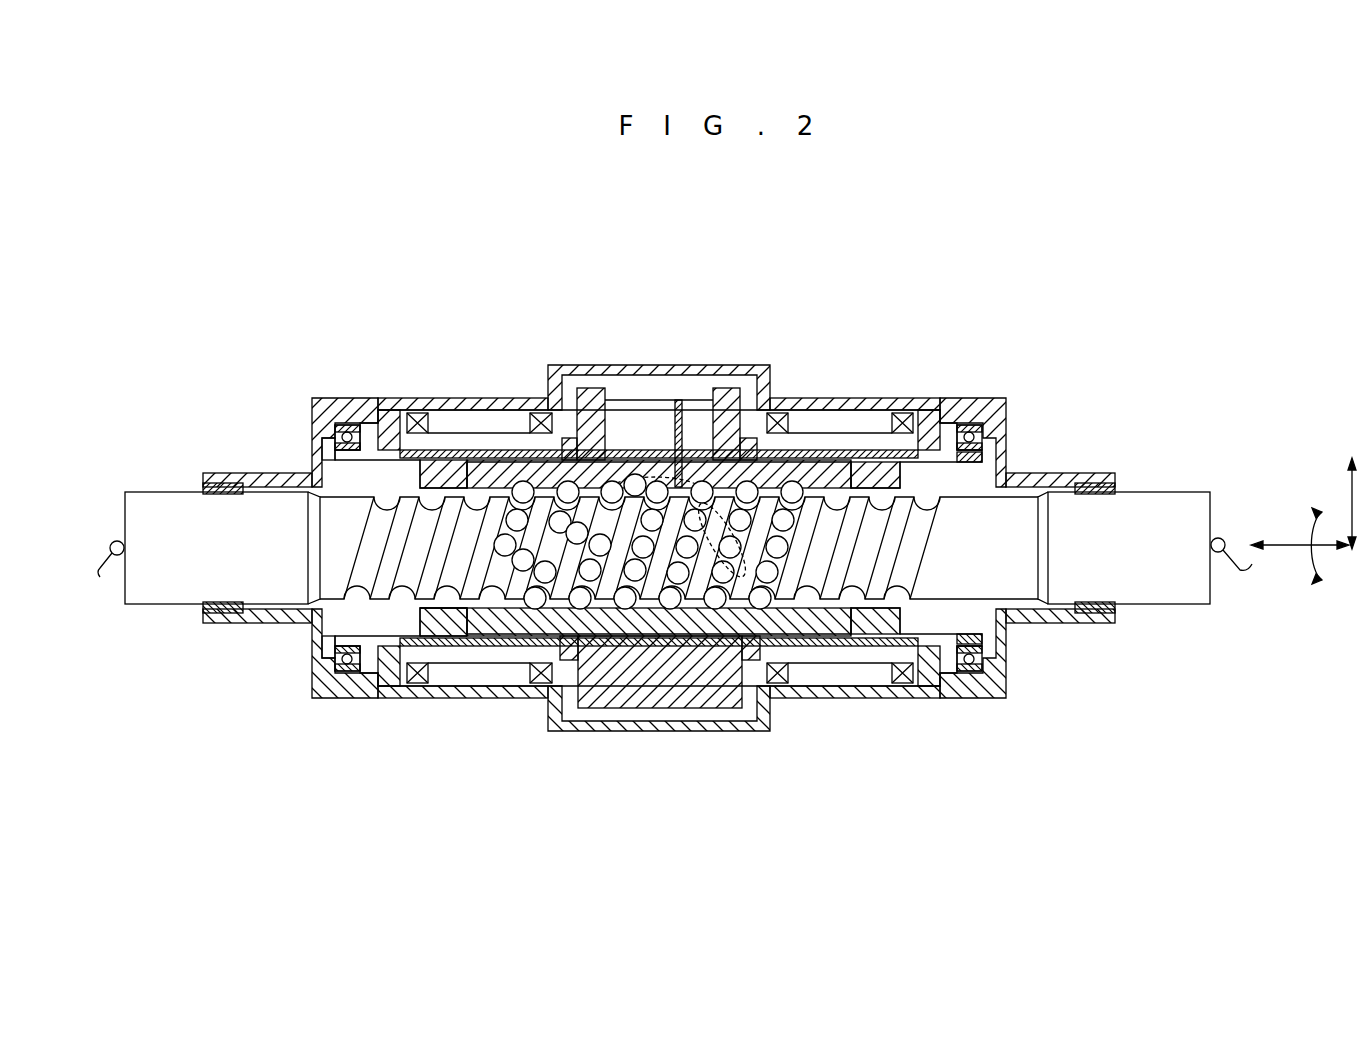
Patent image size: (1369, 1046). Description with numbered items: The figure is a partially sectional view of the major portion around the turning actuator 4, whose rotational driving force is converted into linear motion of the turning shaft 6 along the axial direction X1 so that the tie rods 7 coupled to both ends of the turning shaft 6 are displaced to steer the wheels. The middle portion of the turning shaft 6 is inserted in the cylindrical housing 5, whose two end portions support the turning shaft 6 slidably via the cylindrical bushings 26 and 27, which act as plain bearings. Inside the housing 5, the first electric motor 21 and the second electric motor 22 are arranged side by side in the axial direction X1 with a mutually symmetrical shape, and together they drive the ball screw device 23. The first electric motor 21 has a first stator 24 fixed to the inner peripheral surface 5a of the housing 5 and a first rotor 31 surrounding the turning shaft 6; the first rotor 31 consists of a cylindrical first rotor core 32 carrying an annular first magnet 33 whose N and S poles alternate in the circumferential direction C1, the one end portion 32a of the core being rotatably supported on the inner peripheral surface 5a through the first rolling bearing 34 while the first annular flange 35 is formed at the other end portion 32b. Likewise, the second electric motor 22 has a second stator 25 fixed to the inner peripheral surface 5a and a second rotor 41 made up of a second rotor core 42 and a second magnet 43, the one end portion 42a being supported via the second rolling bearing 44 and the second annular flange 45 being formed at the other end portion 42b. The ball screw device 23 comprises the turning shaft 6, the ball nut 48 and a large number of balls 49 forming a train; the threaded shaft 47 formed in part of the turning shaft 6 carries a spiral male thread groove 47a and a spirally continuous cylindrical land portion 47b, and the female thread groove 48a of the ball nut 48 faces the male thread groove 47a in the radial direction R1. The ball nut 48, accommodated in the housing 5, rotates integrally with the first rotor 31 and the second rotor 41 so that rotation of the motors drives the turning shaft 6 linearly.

The turning actuator 4 is at (1048, 382).
The housing 5 is at (257, 473).
The inner peripheral surface 5a is at (365, 440).
The turning shaft 6 is at (148, 493).
The tie rods 7 is at (110, 545).
The first electric motor 21 is at (452, 407).
The second electric motor 22 is at (813, 410).
The ball screw device 23 is at (690, 400).
The first stator 24 is at (500, 440).
The second stator 25 is at (853, 435).
The cylindrical bushing 26 is at (215, 483).
The cylindrical bushing 27 is at (1105, 470).
The first rotor 31 is at (362, 298).
The first rotor core 32 is at (398, 440).
The one end portion 32a is at (318, 445).
The other end portion 32b is at (522, 450).
The first magnet 33 is at (428, 425).
The first rolling bearing 34 is at (340, 430).
The first annular flange 35 is at (589, 388).
The second rotor 41 is at (985, 335).
The second rotor core 42 is at (930, 420).
The one end portion 42a is at (1000, 455).
The other end portion 42b is at (771, 412).
The second magnet 43 is at (900, 430).
The second rolling bearing 44 is at (977, 425).
The second annular flange 45 is at (727, 388).
The threaded shaft 47 is at (398, 612).
The male thread groove 47a is at (450, 608).
The land portion 47b is at (507, 608).
The ball nut 48 is at (562, 632).
The female thread groove 48a is at (638, 400).
The balls 49 is at (660, 608).
The radial direction R1 is at (1348, 498).
The axial direction X1 is at (1295, 552).
The circumferential direction C1 is at (1315, 580).